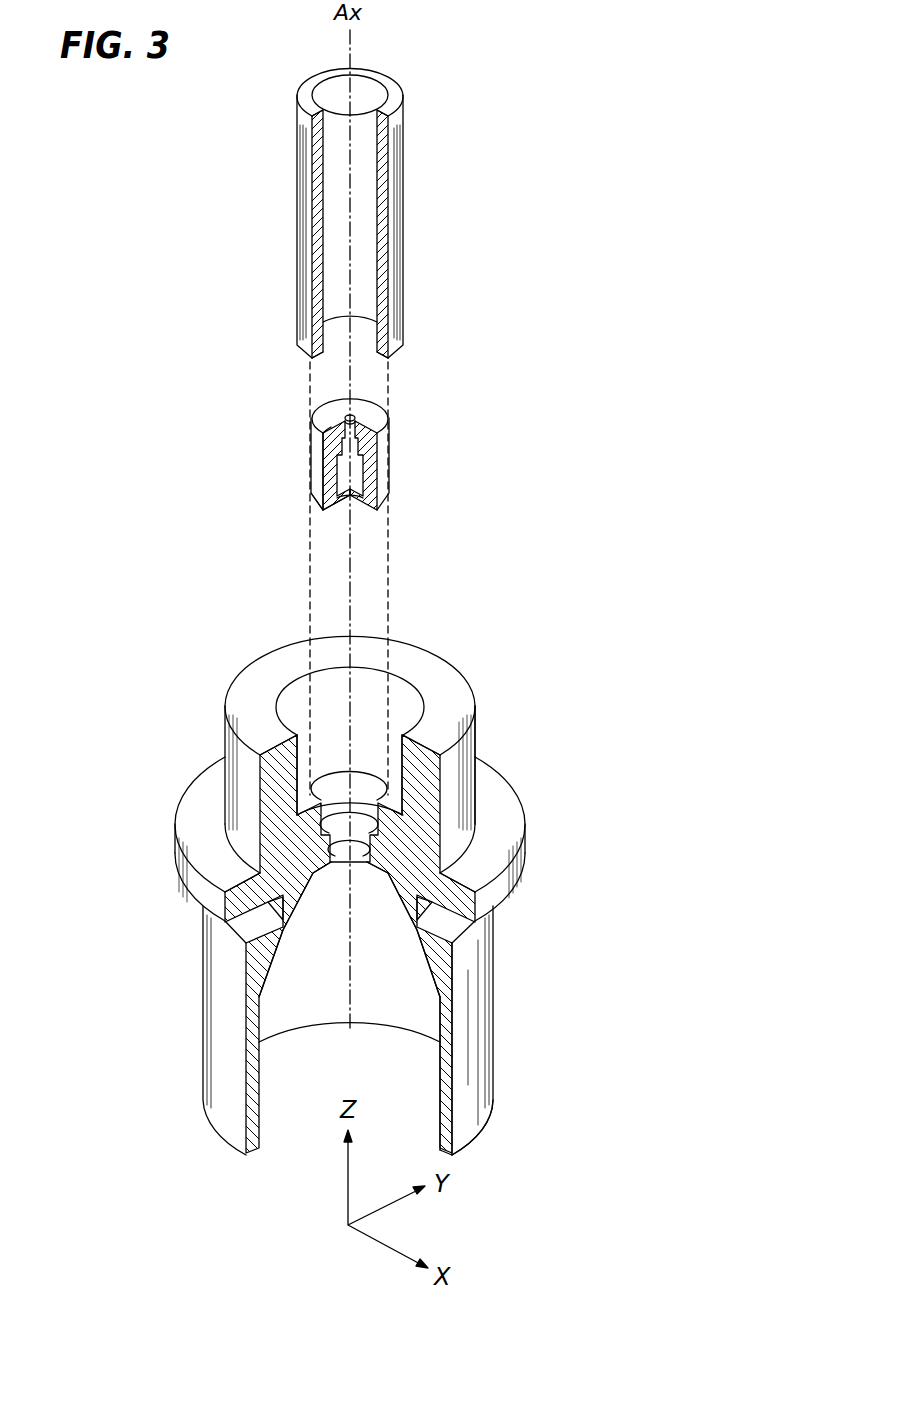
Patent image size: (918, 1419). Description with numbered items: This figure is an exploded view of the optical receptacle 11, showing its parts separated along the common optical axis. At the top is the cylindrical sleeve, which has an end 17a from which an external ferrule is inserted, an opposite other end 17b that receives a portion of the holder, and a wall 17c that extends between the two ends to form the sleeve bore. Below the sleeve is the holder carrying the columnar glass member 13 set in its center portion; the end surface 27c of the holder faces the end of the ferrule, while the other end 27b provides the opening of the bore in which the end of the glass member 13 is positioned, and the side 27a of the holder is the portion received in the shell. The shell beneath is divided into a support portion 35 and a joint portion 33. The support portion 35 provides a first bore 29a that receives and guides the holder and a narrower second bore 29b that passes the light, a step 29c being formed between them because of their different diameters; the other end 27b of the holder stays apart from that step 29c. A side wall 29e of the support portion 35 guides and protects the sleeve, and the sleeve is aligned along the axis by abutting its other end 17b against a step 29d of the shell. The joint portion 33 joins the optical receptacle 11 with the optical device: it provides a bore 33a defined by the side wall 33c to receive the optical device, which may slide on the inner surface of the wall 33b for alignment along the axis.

The optical receptacle 11 is at (505, 190).
The glass member 13 is at (390, 414).
The end of sleeve 17a is at (400, 98).
The other end of sleeve 17b is at (405, 353).
The wall of sleeve 17c is at (390, 126).
The nozzle outer wall 27a is at (322, 468).
The other end of holder 27b is at (323, 510).
The end surface of holder 27c is at (323, 412).
The first bore 29a is at (342, 808).
The second bore 29b is at (360, 733).
The step 29c is at (371, 826).
The step of shell 29d is at (360, 778).
The side wall 29e is at (462, 788).
The joint portion 33 is at (164, 826).
The bore of joint portion 33a is at (322, 982).
The wall 33b is at (478, 1142).
The side wall of joint portion 33c is at (444, 1008).
The support portion 35 is at (164, 706).